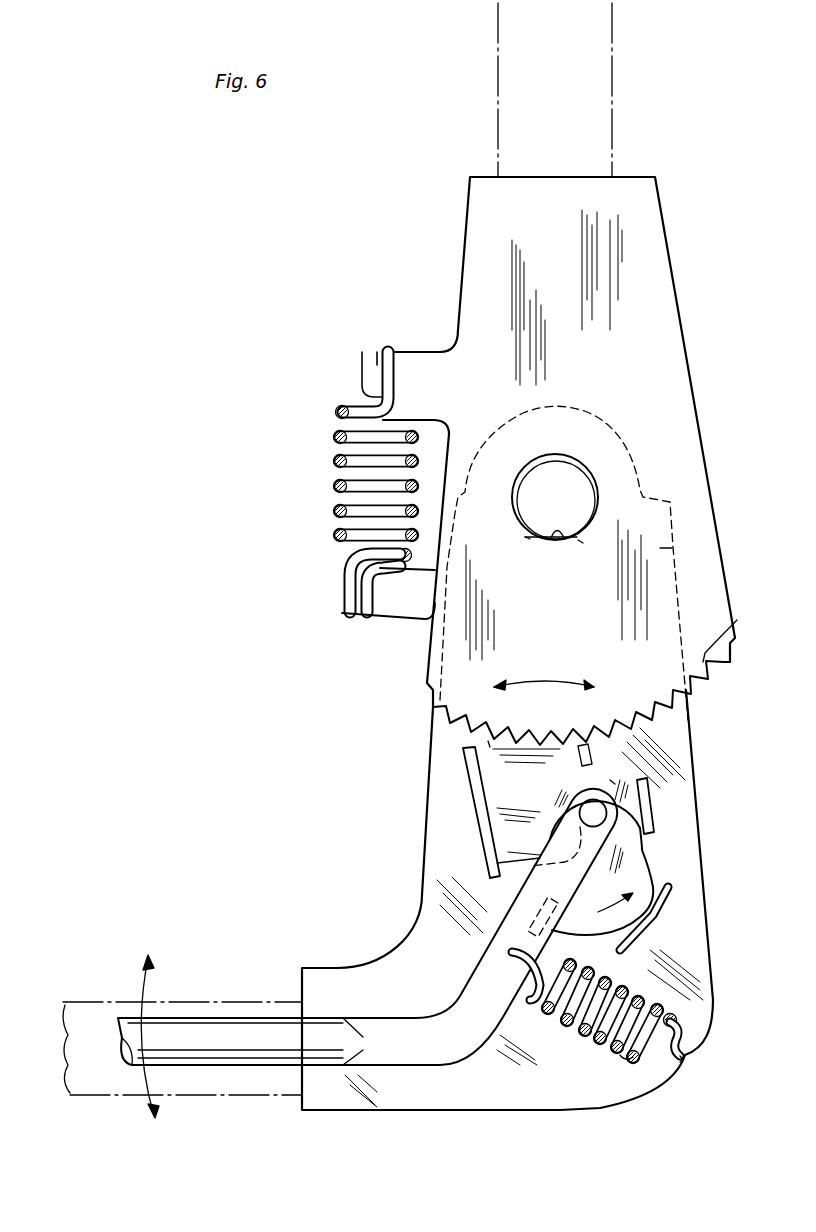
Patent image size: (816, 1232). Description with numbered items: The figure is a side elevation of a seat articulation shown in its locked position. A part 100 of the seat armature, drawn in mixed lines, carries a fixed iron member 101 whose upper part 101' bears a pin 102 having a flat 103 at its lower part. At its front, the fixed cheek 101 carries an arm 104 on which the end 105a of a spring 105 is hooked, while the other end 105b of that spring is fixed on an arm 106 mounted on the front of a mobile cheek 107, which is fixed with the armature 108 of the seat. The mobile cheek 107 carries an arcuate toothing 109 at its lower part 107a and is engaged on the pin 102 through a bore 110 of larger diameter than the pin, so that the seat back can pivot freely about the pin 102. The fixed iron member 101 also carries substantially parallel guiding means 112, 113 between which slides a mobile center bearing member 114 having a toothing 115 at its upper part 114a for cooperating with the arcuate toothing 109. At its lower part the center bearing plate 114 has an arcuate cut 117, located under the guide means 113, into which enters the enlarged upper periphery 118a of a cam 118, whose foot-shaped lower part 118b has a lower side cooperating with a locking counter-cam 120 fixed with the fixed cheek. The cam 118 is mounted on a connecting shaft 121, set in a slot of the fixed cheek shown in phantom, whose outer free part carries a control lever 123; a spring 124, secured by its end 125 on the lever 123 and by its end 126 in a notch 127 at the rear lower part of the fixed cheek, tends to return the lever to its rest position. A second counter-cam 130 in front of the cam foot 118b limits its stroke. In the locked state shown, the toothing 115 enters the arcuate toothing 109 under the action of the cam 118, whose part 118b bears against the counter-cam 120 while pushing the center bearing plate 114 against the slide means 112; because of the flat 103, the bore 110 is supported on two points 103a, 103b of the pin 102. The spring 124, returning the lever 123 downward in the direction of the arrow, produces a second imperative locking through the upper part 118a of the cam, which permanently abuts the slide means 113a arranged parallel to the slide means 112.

The part of the armature of the seat 100 is at (225, 1007).
The fixed iron member 101 is at (531, 900).
The upper part of the fixed iron member 101' is at (715, 530).
The pin 102 is at (583, 490).
The flat 103 is at (559, 538).
The support point of the pin 103a is at (525, 537).
The support point of the pin 103b is at (583, 543).
The arm 104 is at (400, 606).
The spring 105 is at (332, 460).
The end of the spring 105a is at (363, 598).
The other end of the spring 105b is at (383, 376).
The arm 106 is at (407, 366).
The mobile cheek 107 is at (480, 211).
The lower part of the mobile cheek 107a is at (737, 620).
The armature of the seat 108 is at (603, 46).
The arcuate toothing 109 is at (718, 672).
The bore 110 is at (570, 450).
The guiding means 112 is at (483, 840).
The guiding means 113 is at (596, 740).
The slide means 113a is at (650, 800).
The mobile center bearing member 114 is at (470, 786).
The upper part of the center bearing member 114a is at (488, 741).
The toothing 115 is at (544, 701).
The arcuate cut 117 is at (540, 810).
The cam 118 is at (643, 850).
The enlarged upper periphery of the cam 118a is at (610, 780).
The lower part of the cam 118b is at (613, 892).
The locking counter-cam 120 is at (647, 923).
The connecting shaft 121 is at (600, 815).
The control lever 123 is at (455, 1052).
The spring 124 is at (624, 1060).
The end of the spring 125 is at (512, 958).
The end of the spring 126 is at (676, 1038).
The notch 127 is at (680, 1058).
The second counter-cam 130 is at (528, 920).